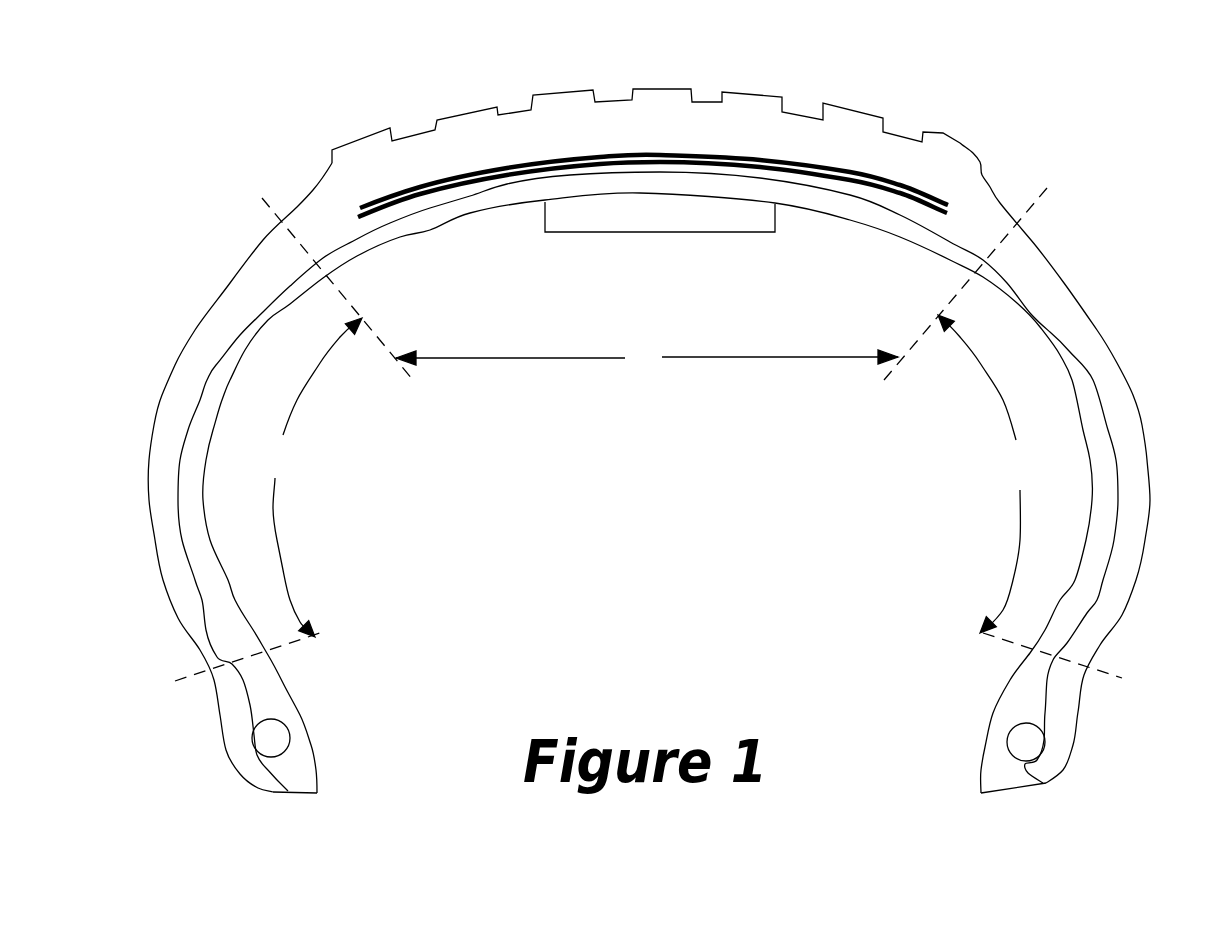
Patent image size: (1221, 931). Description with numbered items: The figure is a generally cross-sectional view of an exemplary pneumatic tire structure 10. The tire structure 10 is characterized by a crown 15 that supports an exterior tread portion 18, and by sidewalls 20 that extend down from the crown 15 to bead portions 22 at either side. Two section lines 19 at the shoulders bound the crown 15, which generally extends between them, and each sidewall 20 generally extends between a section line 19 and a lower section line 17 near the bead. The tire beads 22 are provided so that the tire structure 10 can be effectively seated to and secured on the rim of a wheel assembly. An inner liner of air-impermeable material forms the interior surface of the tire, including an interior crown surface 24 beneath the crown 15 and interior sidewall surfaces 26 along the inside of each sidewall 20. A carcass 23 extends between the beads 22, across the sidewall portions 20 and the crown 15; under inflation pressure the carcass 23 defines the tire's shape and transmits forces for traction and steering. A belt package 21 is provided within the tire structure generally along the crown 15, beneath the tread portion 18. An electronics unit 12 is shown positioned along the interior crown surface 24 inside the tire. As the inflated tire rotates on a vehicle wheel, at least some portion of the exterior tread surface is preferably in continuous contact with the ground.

The pneumatic tire structure 10 is at (1058, 125).
The electronics 12 is at (648, 232).
The crown 15 is at (647, 357).
The section line 17 is at (648, 664).
The exterior tread portion 18 is at (510, 110).
The section line 19 is at (653, 275).
The sidewall 20 is at (649, 476).
The belt package 21 is at (657, 156).
The bead portion 22 is at (277, 792).
The carcass 23 is at (214, 366).
The interior crown surface 24 is at (855, 223).
The interior sidewall surface 26 is at (211, 537).